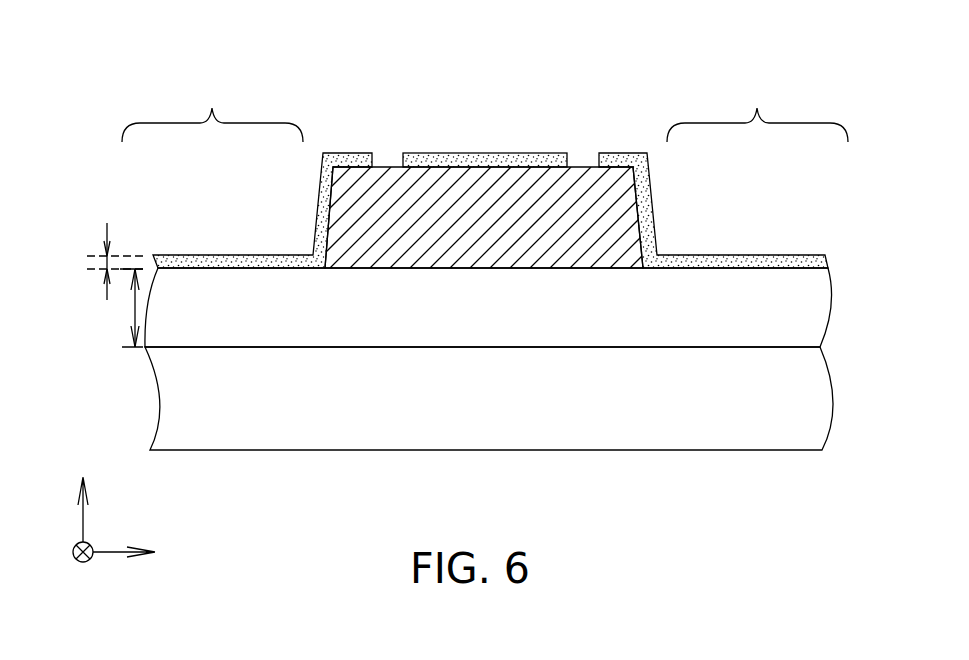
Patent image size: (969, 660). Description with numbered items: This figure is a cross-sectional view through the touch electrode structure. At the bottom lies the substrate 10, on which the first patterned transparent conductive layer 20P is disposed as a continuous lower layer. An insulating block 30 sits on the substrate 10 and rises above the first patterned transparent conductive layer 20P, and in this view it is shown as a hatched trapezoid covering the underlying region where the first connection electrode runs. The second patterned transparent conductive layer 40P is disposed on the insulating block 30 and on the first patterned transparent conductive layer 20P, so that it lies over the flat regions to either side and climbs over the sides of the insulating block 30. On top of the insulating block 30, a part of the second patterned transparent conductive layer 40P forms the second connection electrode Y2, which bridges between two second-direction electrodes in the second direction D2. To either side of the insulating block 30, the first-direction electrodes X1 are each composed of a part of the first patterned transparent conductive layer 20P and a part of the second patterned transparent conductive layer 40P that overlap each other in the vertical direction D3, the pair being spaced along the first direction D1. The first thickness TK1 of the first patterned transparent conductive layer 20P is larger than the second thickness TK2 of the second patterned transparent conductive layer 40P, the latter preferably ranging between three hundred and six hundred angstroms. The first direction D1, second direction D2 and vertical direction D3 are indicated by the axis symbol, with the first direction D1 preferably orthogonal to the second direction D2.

The substrate 10 is at (497, 420).
The first patterned transparent conductive layer 20P is at (207, 300).
The insulating block 30 is at (385, 197).
The second patterned transparent conductive layer 40P is at (485, 144).
The first-direction electrode X1 is at (485, 107).
The second connection electrode Y2 is at (450, 165).
The first thickness TK1 is at (107, 308).
The second thickness TK2 is at (108, 223).
The first direction D1 is at (142, 553).
The second direction D2 is at (62, 553).
The vertical direction D3 is at (87, 494).